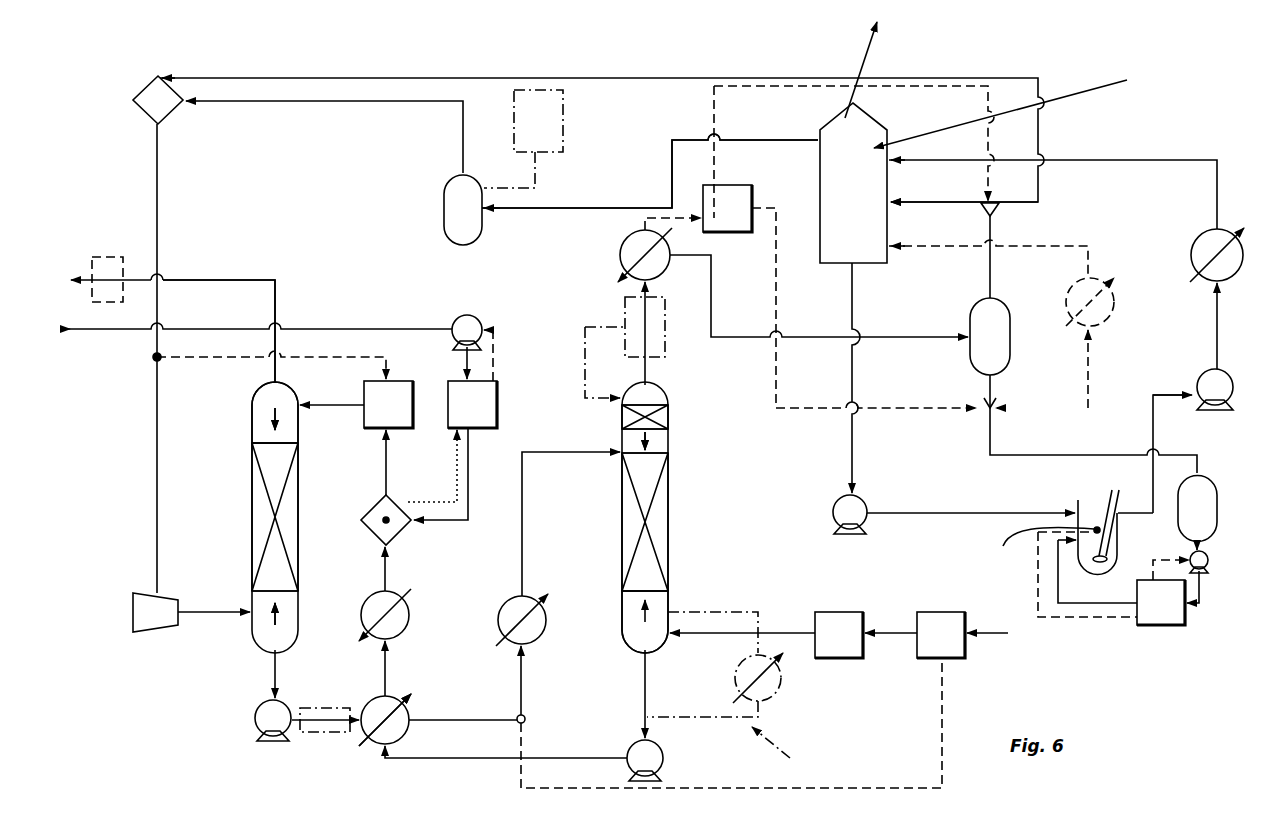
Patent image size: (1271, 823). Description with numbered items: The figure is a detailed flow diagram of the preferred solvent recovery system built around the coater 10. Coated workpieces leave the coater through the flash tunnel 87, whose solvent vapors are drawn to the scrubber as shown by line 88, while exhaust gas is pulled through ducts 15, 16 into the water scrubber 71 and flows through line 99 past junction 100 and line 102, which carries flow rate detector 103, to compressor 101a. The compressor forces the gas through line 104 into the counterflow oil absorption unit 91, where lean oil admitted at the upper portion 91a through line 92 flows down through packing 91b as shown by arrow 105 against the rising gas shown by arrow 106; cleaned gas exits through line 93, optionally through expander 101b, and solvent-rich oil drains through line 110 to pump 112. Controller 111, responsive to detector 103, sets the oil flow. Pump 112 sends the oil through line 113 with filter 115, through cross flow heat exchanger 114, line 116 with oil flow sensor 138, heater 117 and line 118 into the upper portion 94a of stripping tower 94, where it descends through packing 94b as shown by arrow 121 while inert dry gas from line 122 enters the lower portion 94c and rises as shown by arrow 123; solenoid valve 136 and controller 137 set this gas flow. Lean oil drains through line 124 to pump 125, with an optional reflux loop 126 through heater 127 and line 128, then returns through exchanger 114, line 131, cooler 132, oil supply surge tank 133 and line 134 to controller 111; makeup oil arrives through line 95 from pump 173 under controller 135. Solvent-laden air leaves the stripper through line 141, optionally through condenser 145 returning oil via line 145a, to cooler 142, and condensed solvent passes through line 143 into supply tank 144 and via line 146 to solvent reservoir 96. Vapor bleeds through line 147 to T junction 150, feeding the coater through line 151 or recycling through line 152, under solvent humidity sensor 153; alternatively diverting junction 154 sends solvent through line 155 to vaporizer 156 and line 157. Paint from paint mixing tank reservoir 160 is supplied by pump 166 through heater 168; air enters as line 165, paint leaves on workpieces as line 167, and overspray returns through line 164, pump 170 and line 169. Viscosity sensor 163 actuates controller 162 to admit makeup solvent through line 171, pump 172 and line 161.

The coater 10 is at (853, 183).
The duct 15 is at (768, 140).
The duct 16 is at (650, 171).
The water scrubber 71 is at (463, 210).
The flash tunnel 87 is at (566, 107).
The line 88 is at (548, 180).
The counterflow oil absorption unit 91 is at (238, 488).
The upper portion of oil absorption unit 91a is at (262, 424).
The packing 91b is at (268, 460).
The line 92 is at (340, 400).
The line 93 is at (262, 280).
The stripping tower 94 is at (688, 516).
The upper portion of stripping tower 94a is at (678, 440).
The packing 94b is at (668, 537).
The lower portion of stripping tower 94c is at (625, 612).
The line 95 is at (362, 326).
The solvent reservoir 96 is at (1210, 502).
The line 99 is at (335, 112).
The junction 100 is at (145, 110).
The compressor 101a is at (135, 632).
The expander 101b is at (112, 258).
The line 102 is at (152, 470).
The flow rate detector 103 is at (152, 360).
The line 104 is at (222, 608).
The arrow 105 is at (283, 426).
The arrow 106 is at (268, 633).
The line 110 is at (266, 680).
The controller 111 is at (390, 390).
The pump 112 is at (260, 740).
The line 113 is at (357, 748).
The cross flow heat exchanger 114 is at (405, 738).
The filter 115 is at (330, 708).
The line 116 is at (506, 718).
The heater 117 is at (540, 648).
The line 118 is at (524, 528).
The arrow 121 is at (630, 448).
The line 122 is at (700, 636).
The arrow 123 is at (640, 655).
The line 124 is at (638, 720).
The pump 125 is at (665, 760).
The reflux loop 126 is at (780, 751).
The heater 127 is at (778, 700).
The line 128 is at (722, 612).
The line 131 is at (395, 672).
The cooler 132 is at (402, 620).
The oil supply surge tank 133 is at (395, 540).
The line 134 is at (386, 474).
The controller 135 is at (490, 398).
The solenoid valve 136 is at (843, 615).
The controller 137 is at (940, 615).
The oil flow sensor 138 is at (526, 717).
The line 141 is at (650, 372).
The cooler 142 is at (622, 256).
The line 143 is at (712, 314).
The supply tank 144 is at (1000, 343).
The condenser 145 is at (625, 318).
The line 145a is at (585, 370).
The line 146 is at (1045, 455).
The line 147 is at (998, 276).
The T junction 150 is at (1005, 214).
The line 151 is at (908, 210).
The line 152 is at (220, 76).
The solvent humidity sensor 153 is at (740, 205).
The diverting junction 154 is at (985, 396).
The line 155 is at (1090, 380).
The vaporizer 156 is at (1110, 312).
The line 157 is at (1090, 250).
The paint mixing tank reservoir 160 is at (1098, 500).
The line 161 is at (1090, 605).
The controller 162 is at (1165, 625).
The viscosity sensor 163 is at (1037, 540).
The line 164 is at (860, 484).
The line 165 is at (1098, 96).
The pump 166 is at (1222, 378).
The line 167 is at (880, 38).
The heater 168 is at (1226, 230).
The line 169 is at (978, 510).
The pump 170 is at (835, 525).
The line 171 is at (1207, 555).
The pump 172 is at (1212, 575).
The pump 173 is at (468, 315).